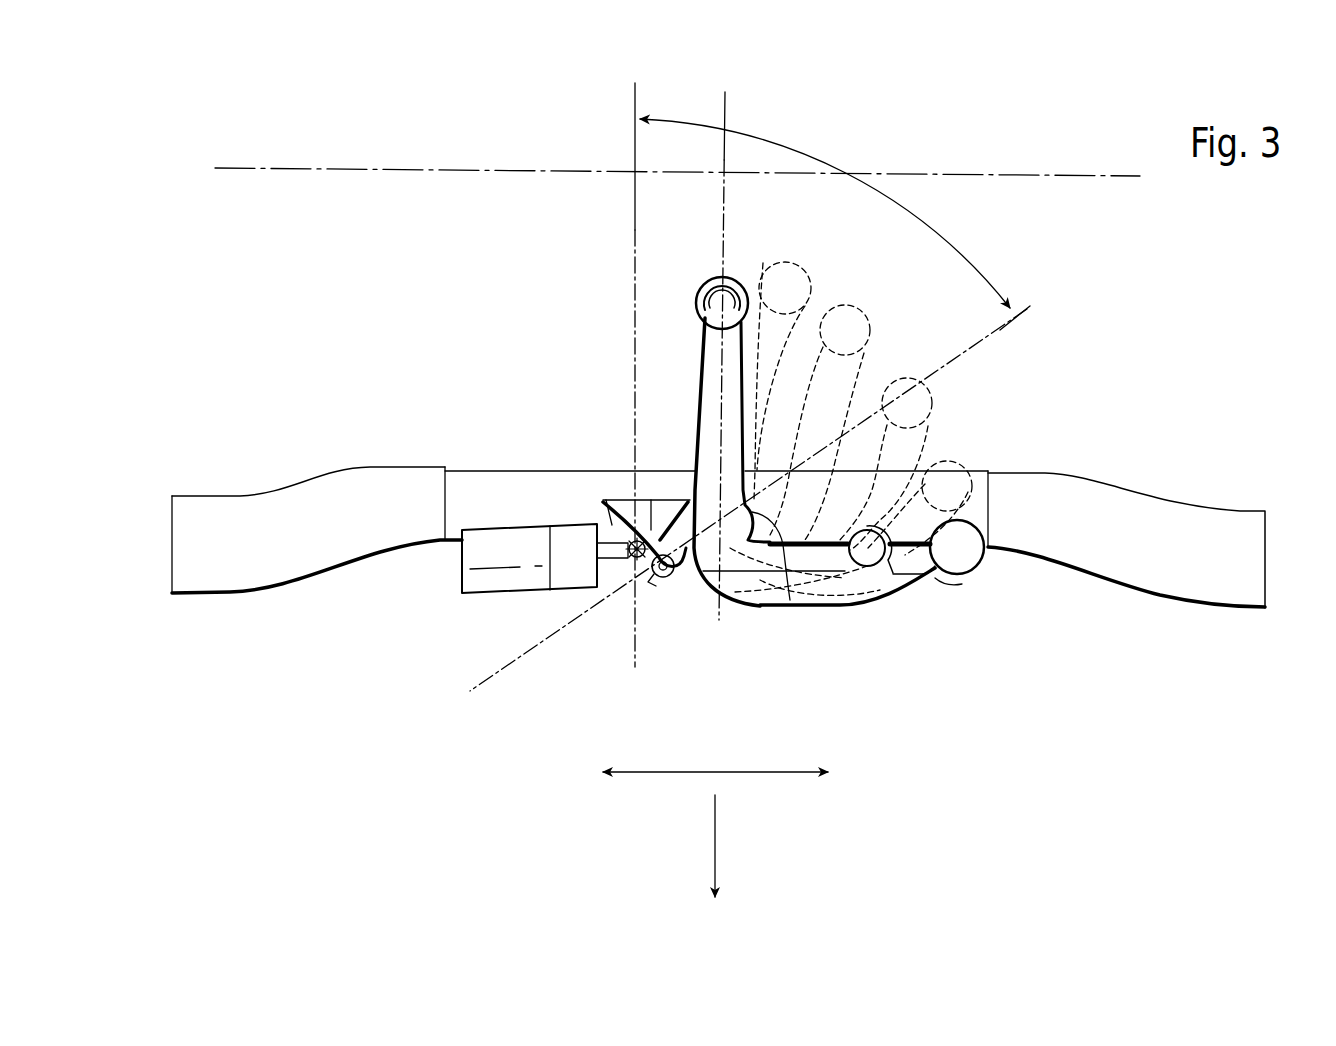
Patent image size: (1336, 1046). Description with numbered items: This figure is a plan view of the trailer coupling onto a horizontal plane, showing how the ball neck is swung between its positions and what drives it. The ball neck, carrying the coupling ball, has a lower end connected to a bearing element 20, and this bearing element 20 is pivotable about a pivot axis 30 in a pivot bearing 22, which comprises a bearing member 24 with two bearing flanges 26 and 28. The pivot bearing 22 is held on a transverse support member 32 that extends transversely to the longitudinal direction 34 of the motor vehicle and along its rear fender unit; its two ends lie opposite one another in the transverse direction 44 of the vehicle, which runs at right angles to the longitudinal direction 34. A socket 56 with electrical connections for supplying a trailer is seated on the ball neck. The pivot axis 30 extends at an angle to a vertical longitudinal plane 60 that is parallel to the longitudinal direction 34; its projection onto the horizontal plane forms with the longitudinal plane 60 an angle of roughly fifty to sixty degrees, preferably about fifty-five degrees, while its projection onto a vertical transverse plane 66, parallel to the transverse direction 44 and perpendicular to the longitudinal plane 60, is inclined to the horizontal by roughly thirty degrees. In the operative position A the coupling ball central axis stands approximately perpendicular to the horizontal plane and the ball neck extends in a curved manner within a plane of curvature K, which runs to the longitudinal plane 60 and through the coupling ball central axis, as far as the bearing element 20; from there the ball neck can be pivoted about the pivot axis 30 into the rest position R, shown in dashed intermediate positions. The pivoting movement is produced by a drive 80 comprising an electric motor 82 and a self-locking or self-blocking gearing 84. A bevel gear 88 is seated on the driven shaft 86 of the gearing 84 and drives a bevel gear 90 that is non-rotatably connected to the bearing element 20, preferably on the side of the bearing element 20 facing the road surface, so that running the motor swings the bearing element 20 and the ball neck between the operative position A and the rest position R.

The bearing element 20 is at (698, 578).
The pivot bearing 22 is at (651, 496).
The bearing member 24 is at (667, 500).
The bearing flange 26 is at (693, 582).
The bearing flange 28 is at (790, 600).
The pivot axis 30 is at (1013, 328).
The transverse support member 32 is at (477, 477).
The longitudinal direction 34 is at (717, 826).
The transverse direction 44 is at (760, 772).
The socket 56 is at (876, 556).
The vertical longitudinal plane 60 is at (635, 214).
The vertical transverse plane 66 is at (345, 169).
The drive 80 is at (480, 598).
The electric motor 82 is at (462, 554).
The gearing 84 is at (567, 580).
The driven shaft 86 is at (613, 572).
The bevel gear 88 is at (606, 500).
The bevel gear 90 is at (656, 578).
The operative position A is at (706, 282).
The plane of curvature K is at (728, 108).
The rest position R is at (992, 563).